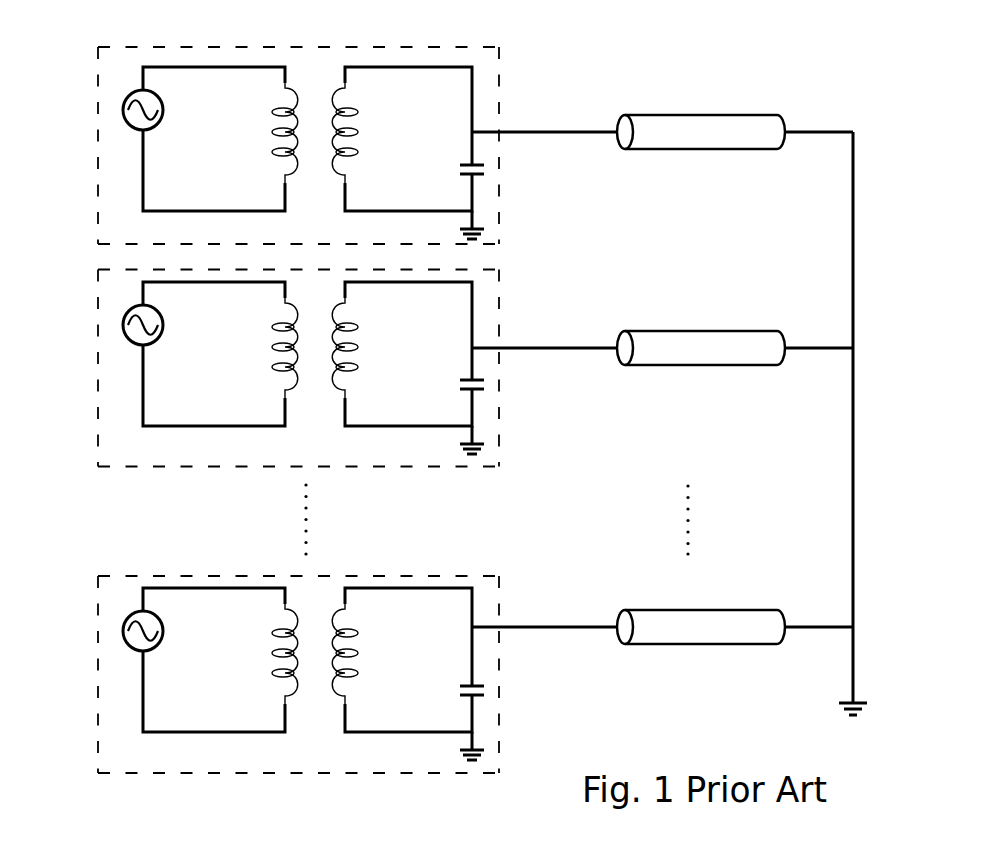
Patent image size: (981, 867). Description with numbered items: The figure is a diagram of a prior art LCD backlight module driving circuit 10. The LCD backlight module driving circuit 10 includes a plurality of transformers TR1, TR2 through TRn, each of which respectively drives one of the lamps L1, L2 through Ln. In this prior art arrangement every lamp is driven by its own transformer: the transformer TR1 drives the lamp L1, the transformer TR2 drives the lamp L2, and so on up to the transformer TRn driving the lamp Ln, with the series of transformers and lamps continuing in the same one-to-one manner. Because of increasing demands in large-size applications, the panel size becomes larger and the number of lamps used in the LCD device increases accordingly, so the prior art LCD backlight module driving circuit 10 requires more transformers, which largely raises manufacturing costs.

The LCD backlight module driving circuit 10 is at (503, 407).
The transformer TR1 is at (267, 145).
The transformer TR2 is at (267, 368).
The transformer TRn is at (267, 674).
The lamp L1 is at (662, 132).
The lamp L2 is at (662, 348).
The lamp Ln is at (662, 627).